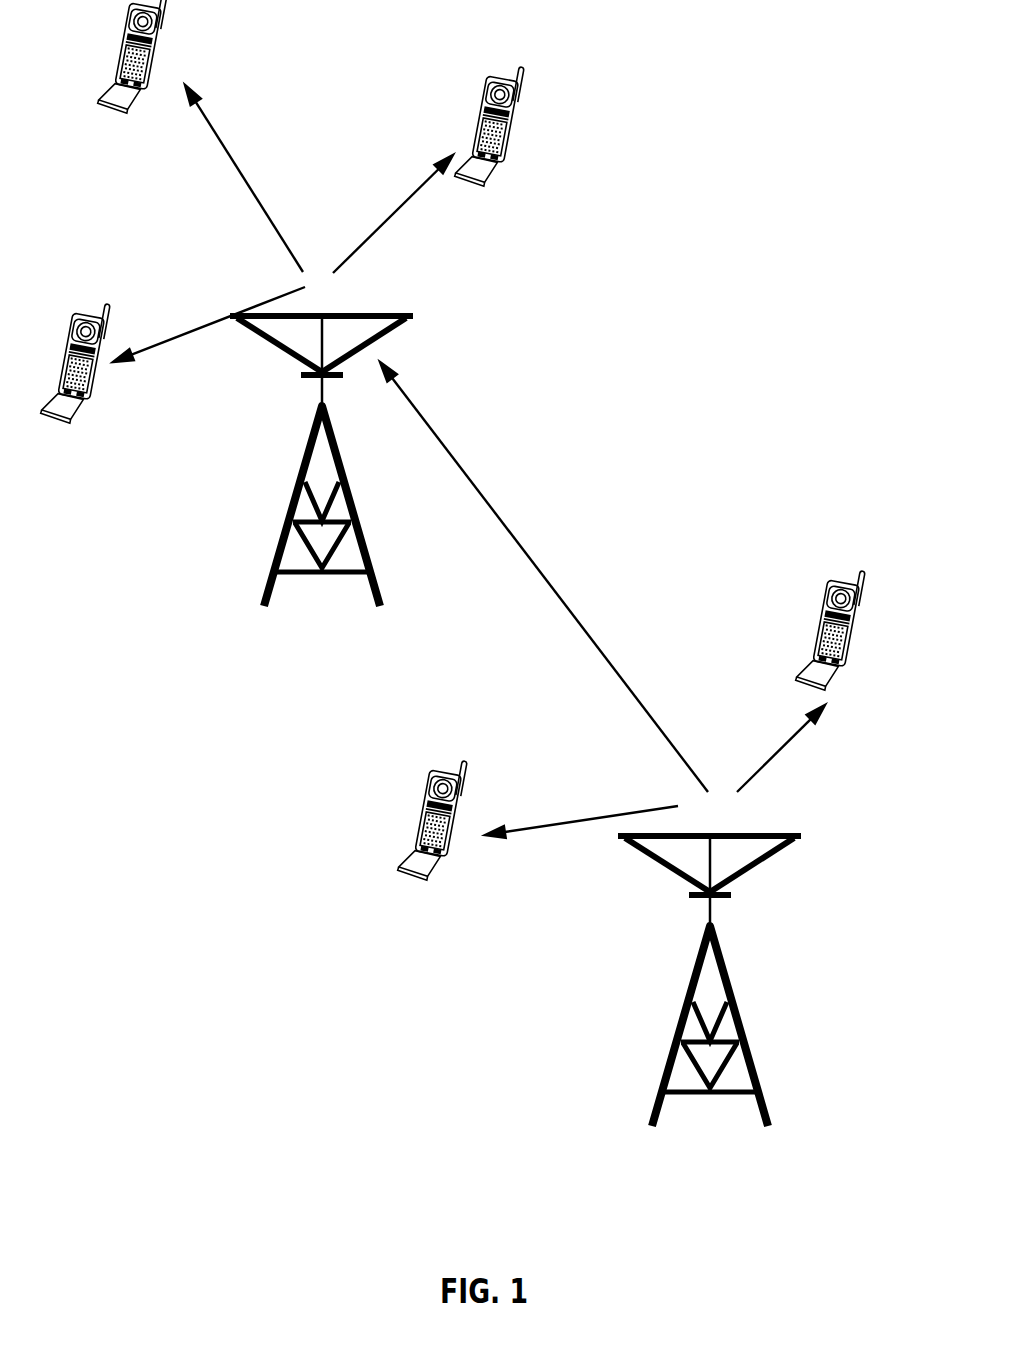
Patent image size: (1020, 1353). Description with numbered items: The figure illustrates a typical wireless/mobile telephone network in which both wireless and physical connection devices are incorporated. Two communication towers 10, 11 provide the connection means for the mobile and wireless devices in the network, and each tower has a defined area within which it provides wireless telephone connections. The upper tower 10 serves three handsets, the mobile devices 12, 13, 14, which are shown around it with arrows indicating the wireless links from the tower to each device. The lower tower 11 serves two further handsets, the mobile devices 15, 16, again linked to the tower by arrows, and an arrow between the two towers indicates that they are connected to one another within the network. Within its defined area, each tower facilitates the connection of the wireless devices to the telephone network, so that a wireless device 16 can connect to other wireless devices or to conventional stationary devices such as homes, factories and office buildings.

The communication tower 10 is at (328, 577).
The communication tower 11 is at (728, 1090).
The mobile device 12 is at (152, 86).
The mobile device 13 is at (97, 387).
The mobile device 14 is at (498, 162).
The mobile device 15 is at (848, 665).
The wireless device 16 is at (455, 843).